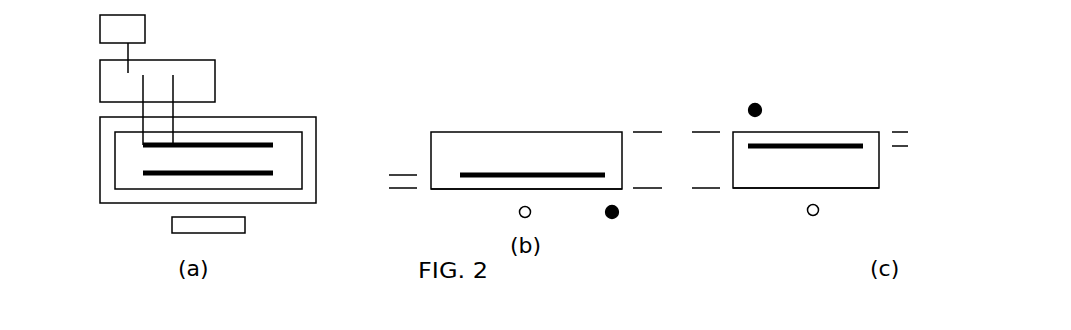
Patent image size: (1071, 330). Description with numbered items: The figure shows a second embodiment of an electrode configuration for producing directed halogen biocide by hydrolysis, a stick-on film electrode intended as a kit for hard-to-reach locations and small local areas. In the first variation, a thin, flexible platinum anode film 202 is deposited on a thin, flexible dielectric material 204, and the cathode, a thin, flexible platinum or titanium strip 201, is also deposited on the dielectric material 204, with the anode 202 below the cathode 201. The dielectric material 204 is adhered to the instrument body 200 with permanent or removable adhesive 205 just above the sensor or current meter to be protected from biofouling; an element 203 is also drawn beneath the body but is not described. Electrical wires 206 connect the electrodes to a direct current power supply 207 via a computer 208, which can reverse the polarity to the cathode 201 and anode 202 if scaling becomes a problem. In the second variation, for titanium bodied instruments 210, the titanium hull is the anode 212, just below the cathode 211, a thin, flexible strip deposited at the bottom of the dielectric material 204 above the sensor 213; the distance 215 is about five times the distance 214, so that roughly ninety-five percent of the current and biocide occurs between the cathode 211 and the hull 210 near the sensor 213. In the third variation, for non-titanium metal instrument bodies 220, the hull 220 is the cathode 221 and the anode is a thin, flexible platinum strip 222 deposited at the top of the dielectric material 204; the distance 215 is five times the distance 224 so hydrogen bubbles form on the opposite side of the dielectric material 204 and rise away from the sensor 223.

The instrument body 200 is at (245, 50).
The cathode 201 is at (233, 145).
The platinum anode film 202 is at (258, 176).
The light source / output 203 is at (208, 236).
The dielectric material 204 is at (130, 173).
The adhesive 205 is at (100, 160).
The electrical wires 206 is at (173, 85).
The direct current power supply 207 is at (115, 30).
The computer 208 is at (100, 87).
The titanium bodied instrument 210 is at (526, 113).
The cathode 211 is at (562, 171).
The anode 212 is at (632, 216).
The sensor 213 is at (547, 216).
The distance 214 is at (382, 187).
The distance 215 is at (660, 160).
The non-titanium metal instrument body 220 is at (785, 112).
The cathode 221 is at (779, 105).
The platinum anode strip 222 is at (822, 147).
The sensor 223 is at (813, 230).
The distance 224 is at (893, 133).